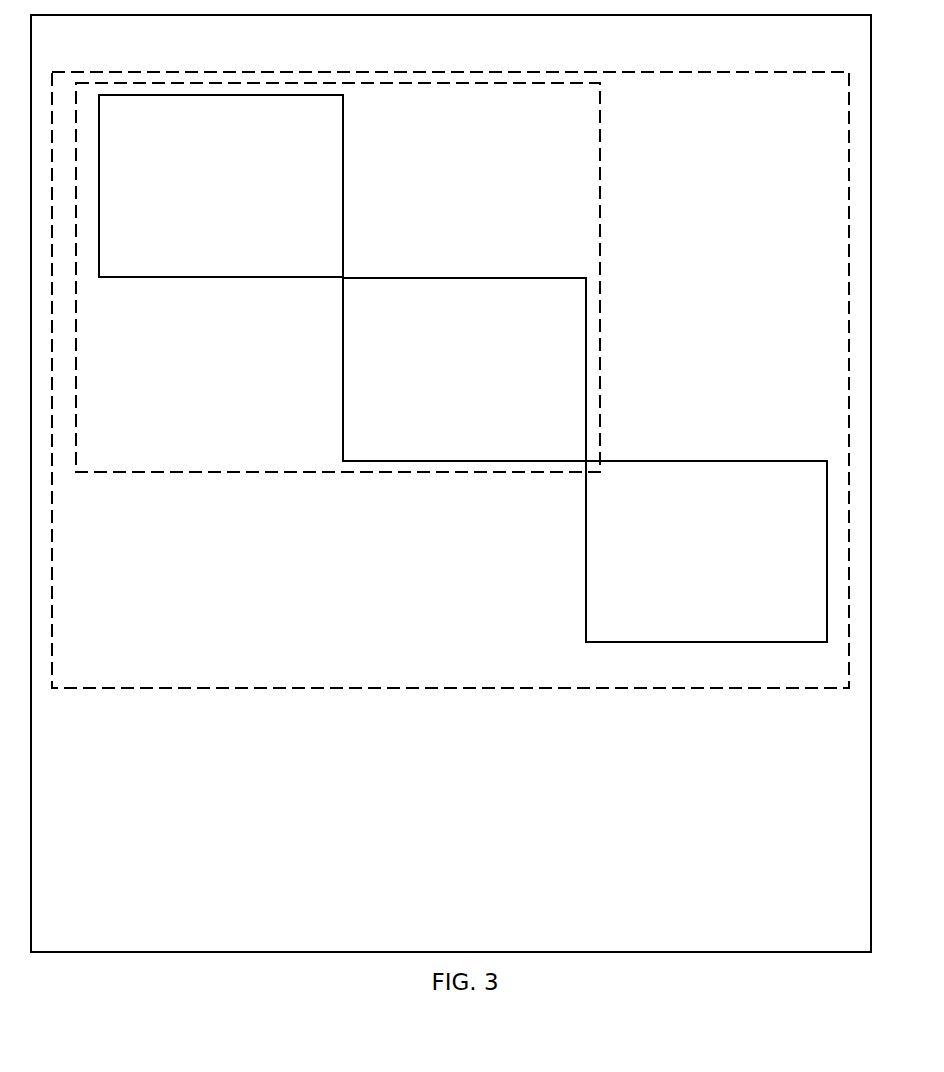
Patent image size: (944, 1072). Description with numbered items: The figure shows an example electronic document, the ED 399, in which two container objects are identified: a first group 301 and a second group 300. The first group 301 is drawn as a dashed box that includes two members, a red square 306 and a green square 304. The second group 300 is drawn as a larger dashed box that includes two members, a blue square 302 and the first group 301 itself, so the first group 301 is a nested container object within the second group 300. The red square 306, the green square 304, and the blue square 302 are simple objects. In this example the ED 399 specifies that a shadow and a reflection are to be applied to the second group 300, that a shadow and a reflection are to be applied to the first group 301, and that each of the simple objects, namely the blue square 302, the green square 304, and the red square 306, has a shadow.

The ED 399 is at (448, 846).
The Group 2 300 is at (440, 664).
The Group 1 301 is at (424, 205).
The red square 306 is at (209, 205).
The green square 304 is at (450, 388).
The blue square 302 is at (694, 571).